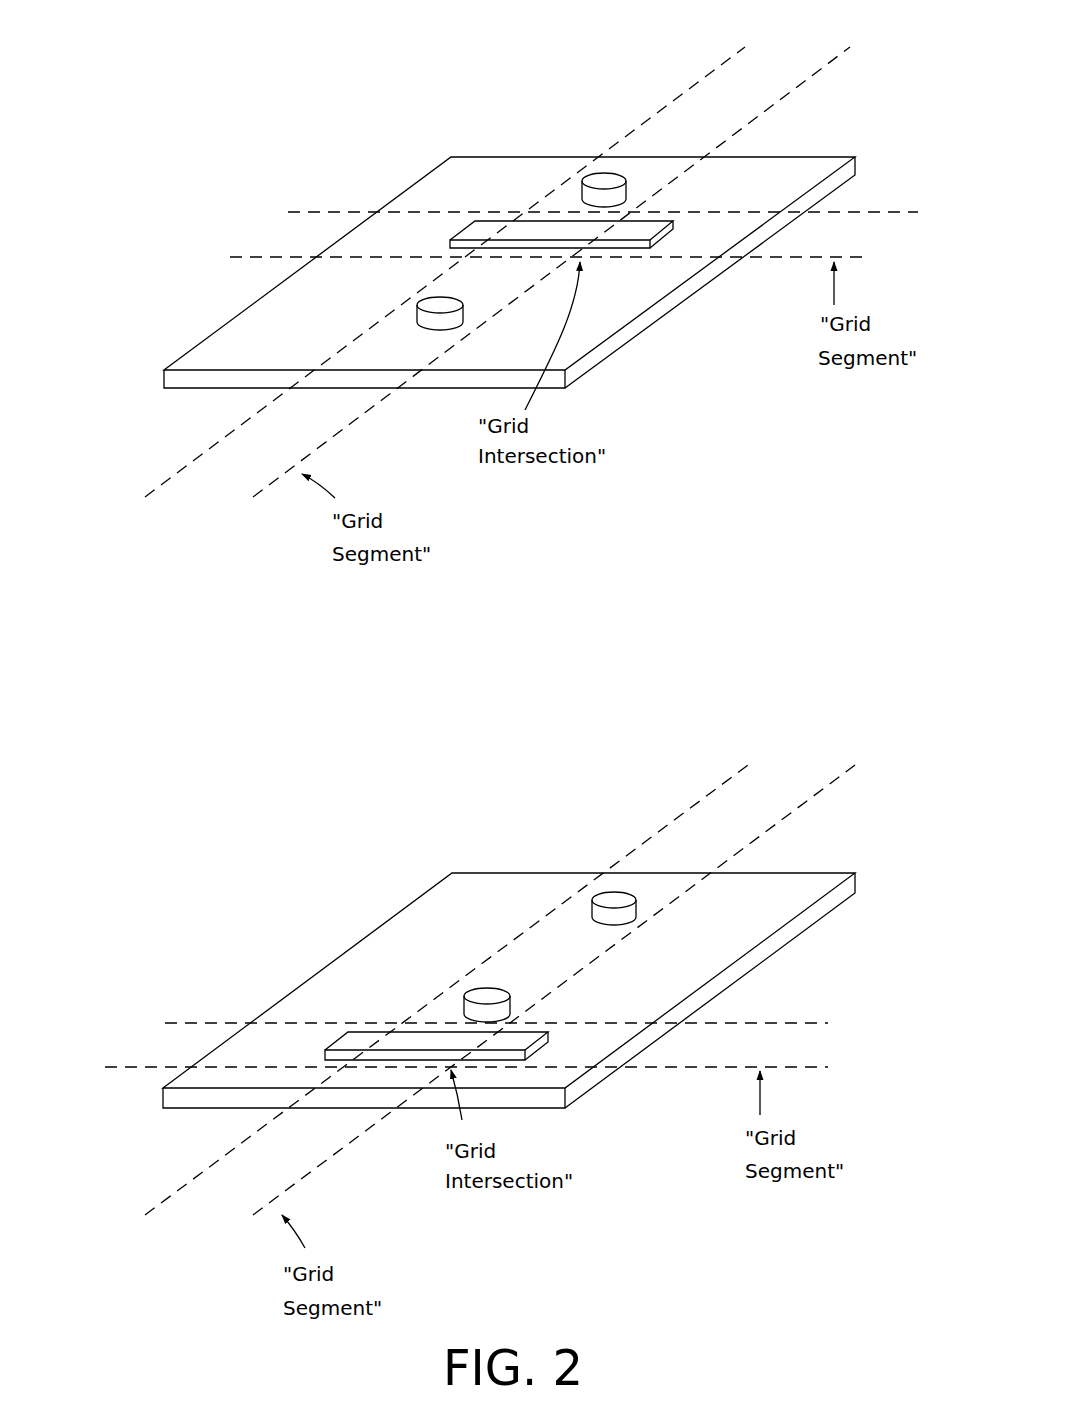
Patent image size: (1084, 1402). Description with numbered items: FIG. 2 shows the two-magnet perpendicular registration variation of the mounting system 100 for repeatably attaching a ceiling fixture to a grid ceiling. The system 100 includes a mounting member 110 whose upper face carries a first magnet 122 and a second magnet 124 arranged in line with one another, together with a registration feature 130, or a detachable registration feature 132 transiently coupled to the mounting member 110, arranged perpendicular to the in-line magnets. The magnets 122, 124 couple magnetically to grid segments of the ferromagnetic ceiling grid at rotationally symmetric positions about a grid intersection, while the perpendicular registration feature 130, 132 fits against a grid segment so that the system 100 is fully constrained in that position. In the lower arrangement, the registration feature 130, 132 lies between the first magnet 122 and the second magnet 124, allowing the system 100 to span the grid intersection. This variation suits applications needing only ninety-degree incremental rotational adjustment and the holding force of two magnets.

The mounting system 100 is at (136, 98).
The mounting member 110 is at (607, 368).
The first magnet 122 is at (427, 287).
The second magnet 124 is at (612, 168).
The registration feature 130 is at (467, 571).
The detachable registration feature 132 is at (488, 228).